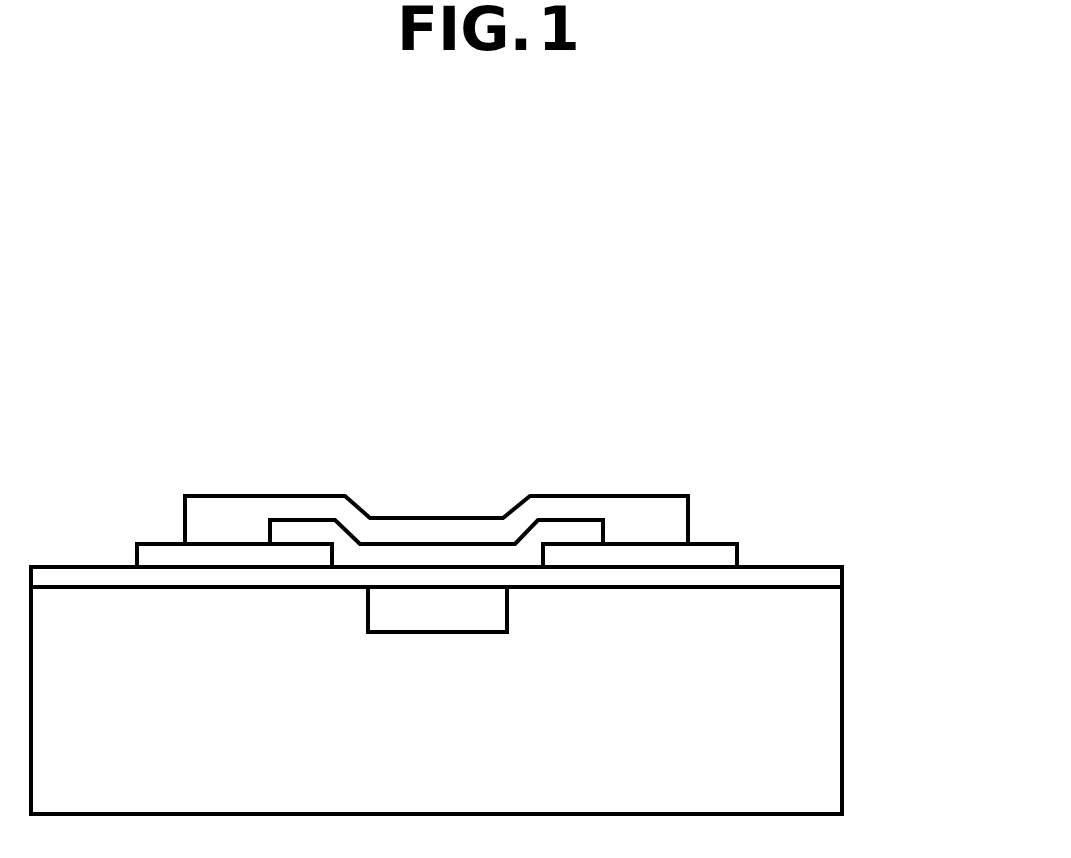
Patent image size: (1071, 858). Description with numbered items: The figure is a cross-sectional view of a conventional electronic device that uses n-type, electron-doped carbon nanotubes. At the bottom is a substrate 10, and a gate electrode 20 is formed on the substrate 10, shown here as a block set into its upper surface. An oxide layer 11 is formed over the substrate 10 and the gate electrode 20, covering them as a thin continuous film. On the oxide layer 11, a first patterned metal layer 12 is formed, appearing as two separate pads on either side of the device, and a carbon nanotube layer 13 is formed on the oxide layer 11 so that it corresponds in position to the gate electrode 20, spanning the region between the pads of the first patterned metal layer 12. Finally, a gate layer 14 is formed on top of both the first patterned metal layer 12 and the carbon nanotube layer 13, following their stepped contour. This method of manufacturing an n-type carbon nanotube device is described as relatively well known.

The substrate 10 is at (845, 700).
The oxide layer 11 is at (845, 583).
The first patterned metal layer 12 is at (135, 544).
The carbon nanotube layer 13 is at (573, 530).
The gate layer 14 is at (290, 500).
The gate electrode 20 is at (438, 603).